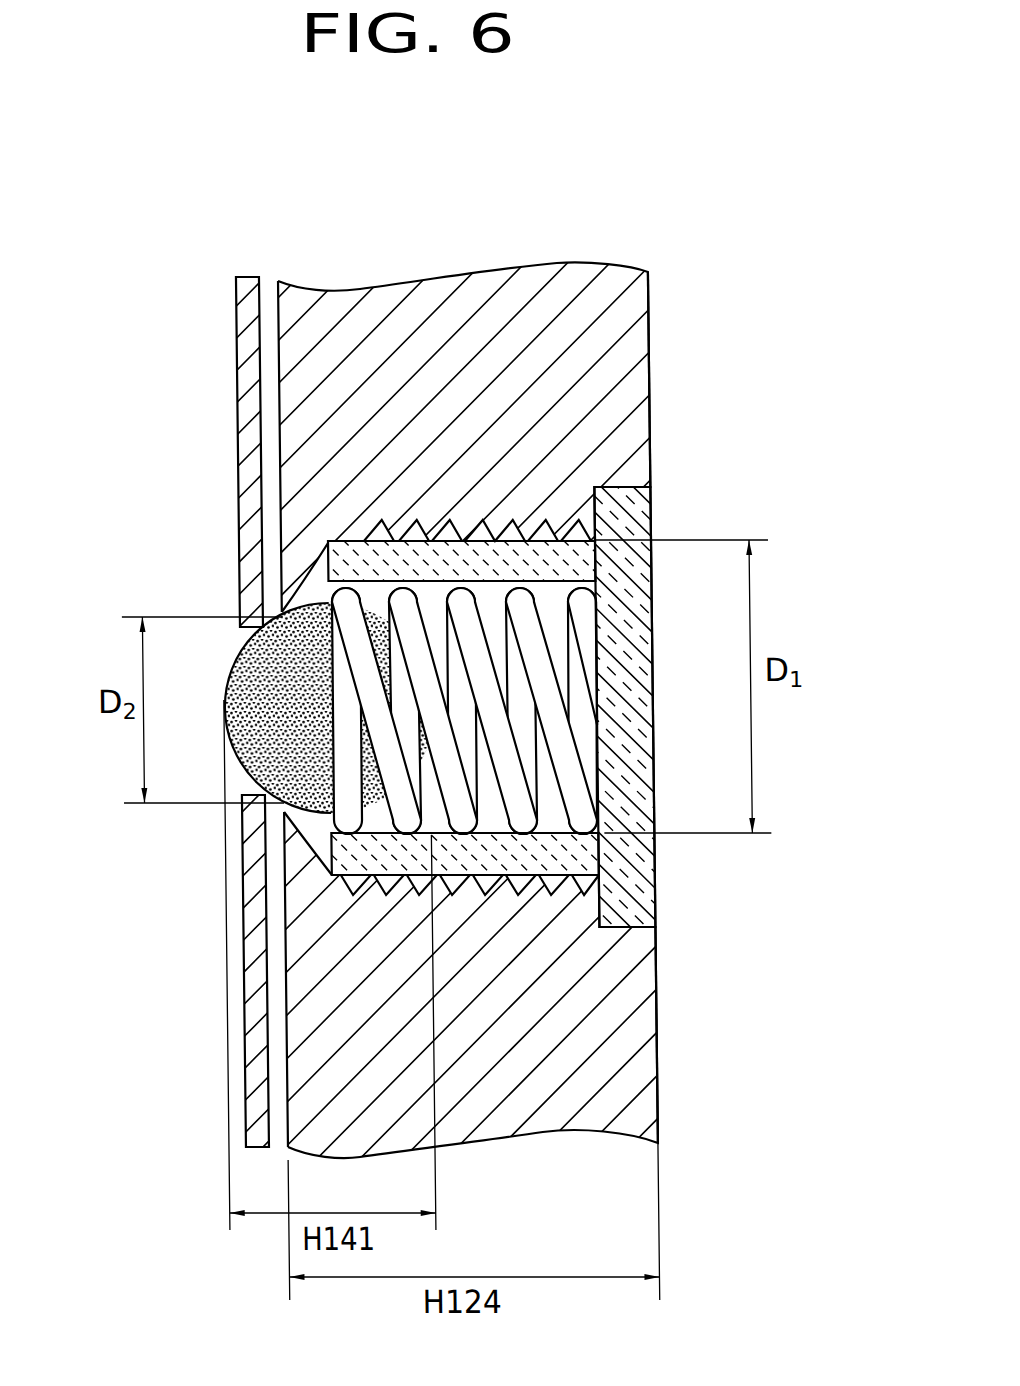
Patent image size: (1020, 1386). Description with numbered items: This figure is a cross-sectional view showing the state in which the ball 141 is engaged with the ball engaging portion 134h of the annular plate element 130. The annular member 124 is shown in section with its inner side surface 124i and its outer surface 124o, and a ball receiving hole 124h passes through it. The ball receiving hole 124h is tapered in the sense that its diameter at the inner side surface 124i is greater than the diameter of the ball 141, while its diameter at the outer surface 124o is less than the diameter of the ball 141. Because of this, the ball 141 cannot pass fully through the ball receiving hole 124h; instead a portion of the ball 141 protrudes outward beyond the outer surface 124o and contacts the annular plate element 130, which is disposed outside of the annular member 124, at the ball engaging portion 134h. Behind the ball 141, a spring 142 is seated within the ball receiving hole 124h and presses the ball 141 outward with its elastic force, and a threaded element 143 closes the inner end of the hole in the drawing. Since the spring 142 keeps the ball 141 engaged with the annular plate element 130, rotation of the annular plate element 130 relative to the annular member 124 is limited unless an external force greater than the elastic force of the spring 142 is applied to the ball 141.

The annular member 124 is at (629, 397).
The outer surface of the annular member 124o is at (273, 326).
The inner side surface of the annular member 124i is at (648, 1020).
The ball receiving hole 124h is at (303, 568).
The annular plate element 130 is at (248, 422).
The ball engaging portion 134h is at (226, 795).
The ball 141 is at (236, 656).
The spring 142 is at (579, 610).
The plug screw 143 is at (629, 893).